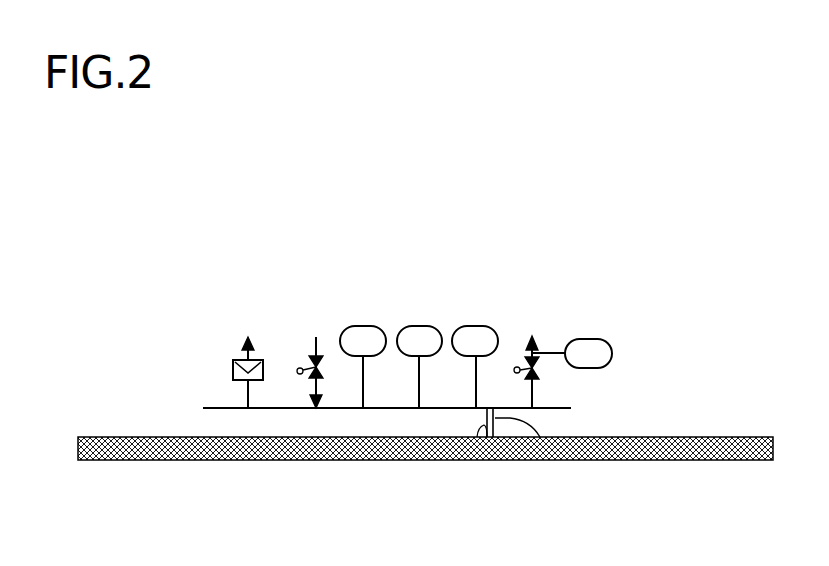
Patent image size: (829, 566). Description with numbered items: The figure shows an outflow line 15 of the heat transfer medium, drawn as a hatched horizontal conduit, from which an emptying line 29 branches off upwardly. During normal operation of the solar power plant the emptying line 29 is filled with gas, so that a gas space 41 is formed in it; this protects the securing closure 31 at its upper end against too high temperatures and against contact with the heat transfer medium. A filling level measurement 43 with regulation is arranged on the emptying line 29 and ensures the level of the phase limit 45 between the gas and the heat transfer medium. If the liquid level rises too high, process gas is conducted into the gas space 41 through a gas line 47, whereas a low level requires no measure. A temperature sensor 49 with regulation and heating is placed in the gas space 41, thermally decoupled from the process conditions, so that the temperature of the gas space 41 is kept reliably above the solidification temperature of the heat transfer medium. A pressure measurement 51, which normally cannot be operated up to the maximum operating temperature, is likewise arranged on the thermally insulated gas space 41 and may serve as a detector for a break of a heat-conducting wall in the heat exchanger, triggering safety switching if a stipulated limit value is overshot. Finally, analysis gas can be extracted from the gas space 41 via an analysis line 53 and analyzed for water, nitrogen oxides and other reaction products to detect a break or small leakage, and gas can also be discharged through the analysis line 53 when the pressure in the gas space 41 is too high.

The outflow line 15 is at (633, 437).
The emptying line 29 is at (540, 437).
The securing closure 31 is at (232, 366).
The gas space 41 is at (520, 458).
The filling level measurement 43 is at (475, 326).
The phase limit 45 is at (478, 428).
The gas line 47 is at (316, 347).
The temperature sensor 49 is at (359, 326).
The pressure measurement 51 is at (413, 326).
The analysis line 53 is at (530, 354).